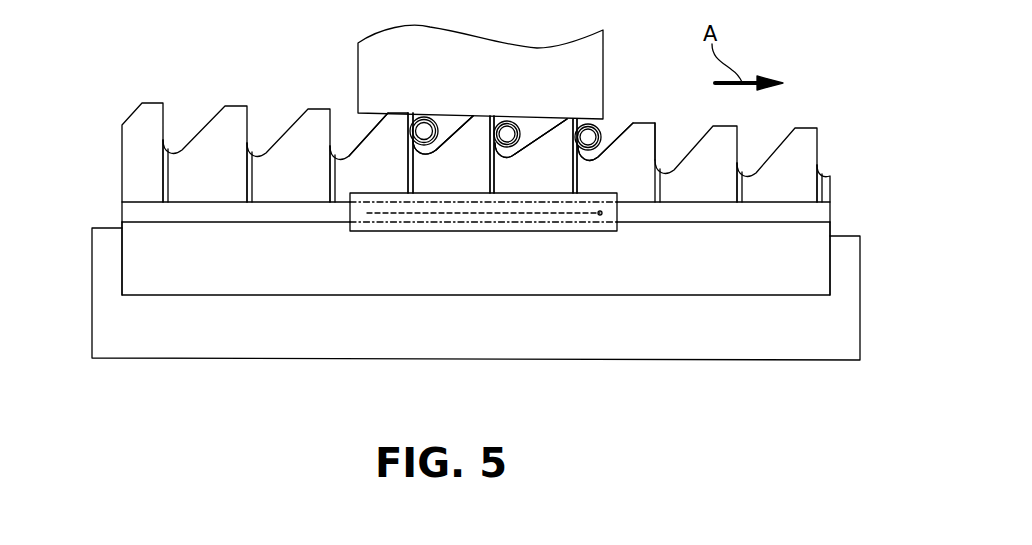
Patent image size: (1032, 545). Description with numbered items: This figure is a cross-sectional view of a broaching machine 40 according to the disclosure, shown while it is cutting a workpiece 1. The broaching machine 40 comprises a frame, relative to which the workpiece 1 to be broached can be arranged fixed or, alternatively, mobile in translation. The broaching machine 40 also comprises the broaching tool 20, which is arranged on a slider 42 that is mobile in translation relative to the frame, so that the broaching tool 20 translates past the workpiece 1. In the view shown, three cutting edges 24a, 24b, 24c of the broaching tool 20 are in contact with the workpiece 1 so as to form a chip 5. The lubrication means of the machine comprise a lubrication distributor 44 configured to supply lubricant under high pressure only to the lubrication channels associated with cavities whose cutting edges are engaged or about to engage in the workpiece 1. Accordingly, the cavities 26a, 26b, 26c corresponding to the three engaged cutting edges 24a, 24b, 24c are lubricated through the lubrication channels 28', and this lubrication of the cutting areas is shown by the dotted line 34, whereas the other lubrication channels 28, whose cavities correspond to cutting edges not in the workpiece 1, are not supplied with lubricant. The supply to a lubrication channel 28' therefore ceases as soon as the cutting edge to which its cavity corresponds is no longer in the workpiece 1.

The workpiece 1 is at (583, 57).
The chip 5 is at (423, 118).
The broaching tool 20 is at (148, 259).
The cutting edge 24a is at (402, 142).
The cutting edge 24b is at (501, 120).
The cutting edge 24c is at (579, 121).
The cavity 26a is at (436, 160).
The cavity 26b is at (527, 172).
The cavity 26c is at (604, 165).
The lubrication channel 28 is at (477, 254).
The lubrication channel 28' is at (483, 227).
The dotted line 34 is at (386, 112).
The broaching machine 40 is at (160, 70).
The slider 42 is at (253, 358).
The lubrication distributor 44 is at (360, 234).